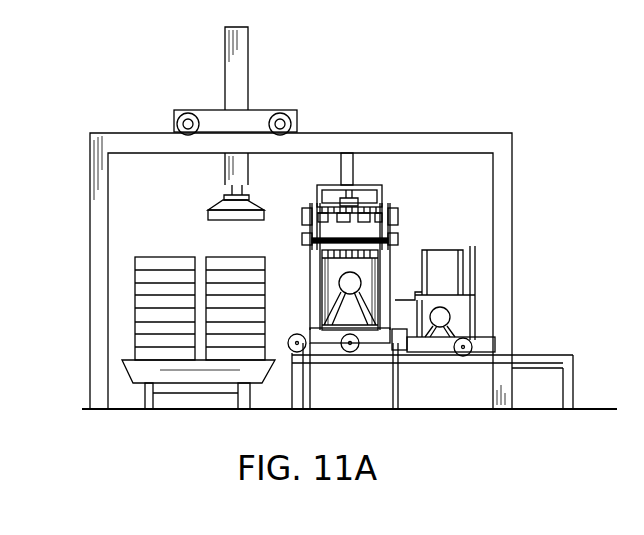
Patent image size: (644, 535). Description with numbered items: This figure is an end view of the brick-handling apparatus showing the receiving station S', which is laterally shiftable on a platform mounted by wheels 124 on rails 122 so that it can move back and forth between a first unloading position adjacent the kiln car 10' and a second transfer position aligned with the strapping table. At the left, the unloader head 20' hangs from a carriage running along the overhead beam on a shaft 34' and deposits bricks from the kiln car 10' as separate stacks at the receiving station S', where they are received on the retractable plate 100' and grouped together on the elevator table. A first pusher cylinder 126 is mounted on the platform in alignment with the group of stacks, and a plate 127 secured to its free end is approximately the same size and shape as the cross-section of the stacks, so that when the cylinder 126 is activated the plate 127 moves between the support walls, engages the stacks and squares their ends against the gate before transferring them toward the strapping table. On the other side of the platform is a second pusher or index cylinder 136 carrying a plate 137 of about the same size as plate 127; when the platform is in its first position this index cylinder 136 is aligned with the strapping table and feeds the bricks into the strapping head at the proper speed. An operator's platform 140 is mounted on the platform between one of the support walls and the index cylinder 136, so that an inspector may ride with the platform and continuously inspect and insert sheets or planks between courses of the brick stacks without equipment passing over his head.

The kiln car 10' is at (191, 362).
The unloader head 20' is at (213, 194).
The ram shaft 34' is at (359, 140).
The retractable plate 100' is at (366, 205).
The receiving station S' is at (278, 273).
The operator's platform 140 is at (422, 252).
The plate 137 is at (440, 260).
The plate 127 is at (330, 268).
The first pusher cylinder 126 is at (343, 287).
The index cylinder 136 is at (445, 317).
The wheels 124 is at (350, 350).
The rails 122 is at (560, 356).